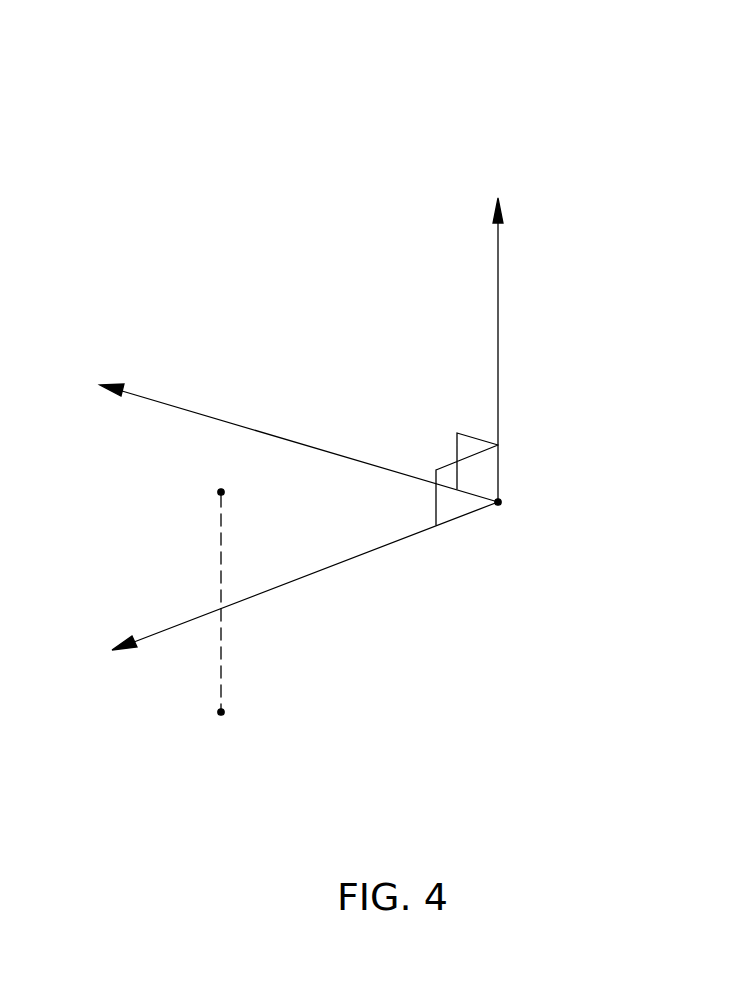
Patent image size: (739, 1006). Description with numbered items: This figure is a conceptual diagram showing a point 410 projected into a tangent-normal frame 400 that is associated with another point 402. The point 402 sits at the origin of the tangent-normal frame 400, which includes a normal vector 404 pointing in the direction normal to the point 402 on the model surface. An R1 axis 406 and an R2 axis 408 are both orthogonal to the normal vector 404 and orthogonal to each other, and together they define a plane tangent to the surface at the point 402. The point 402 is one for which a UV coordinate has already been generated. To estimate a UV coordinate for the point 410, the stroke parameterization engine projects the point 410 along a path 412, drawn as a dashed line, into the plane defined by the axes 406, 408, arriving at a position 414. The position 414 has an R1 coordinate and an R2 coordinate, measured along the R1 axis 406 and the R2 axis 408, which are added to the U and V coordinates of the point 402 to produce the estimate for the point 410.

The tangent-normal frame 400 is at (562, 40).
The point 402 is at (500, 503).
The normal vector 404 is at (498, 300).
The R1 axis 406 is at (367, 462).
The R2 axis 408 is at (365, 553).
The point 410 is at (224, 712).
The path 412 is at (221, 640).
The position 414 is at (224, 492).